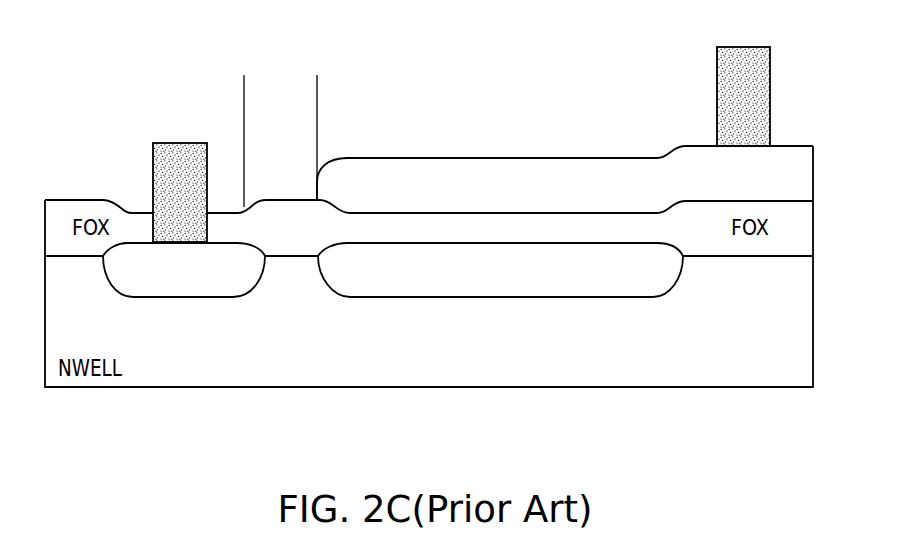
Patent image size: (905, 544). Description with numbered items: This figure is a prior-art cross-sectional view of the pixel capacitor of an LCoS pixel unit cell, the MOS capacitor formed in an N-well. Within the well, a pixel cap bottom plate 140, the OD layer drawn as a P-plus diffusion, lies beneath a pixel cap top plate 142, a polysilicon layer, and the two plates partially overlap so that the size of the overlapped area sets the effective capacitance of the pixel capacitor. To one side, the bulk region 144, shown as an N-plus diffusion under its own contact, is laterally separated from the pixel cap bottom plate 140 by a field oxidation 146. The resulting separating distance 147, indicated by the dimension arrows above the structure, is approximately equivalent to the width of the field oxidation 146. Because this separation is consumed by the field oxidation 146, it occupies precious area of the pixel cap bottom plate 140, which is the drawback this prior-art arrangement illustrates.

The pixel cap bottom plate 140 is at (460, 273).
The pixel cap top plate 142 is at (460, 178).
The bulk region 144 is at (192, 283).
The field oxidation (FOX) 146 is at (289, 207).
The distance 147 is at (315, 83).